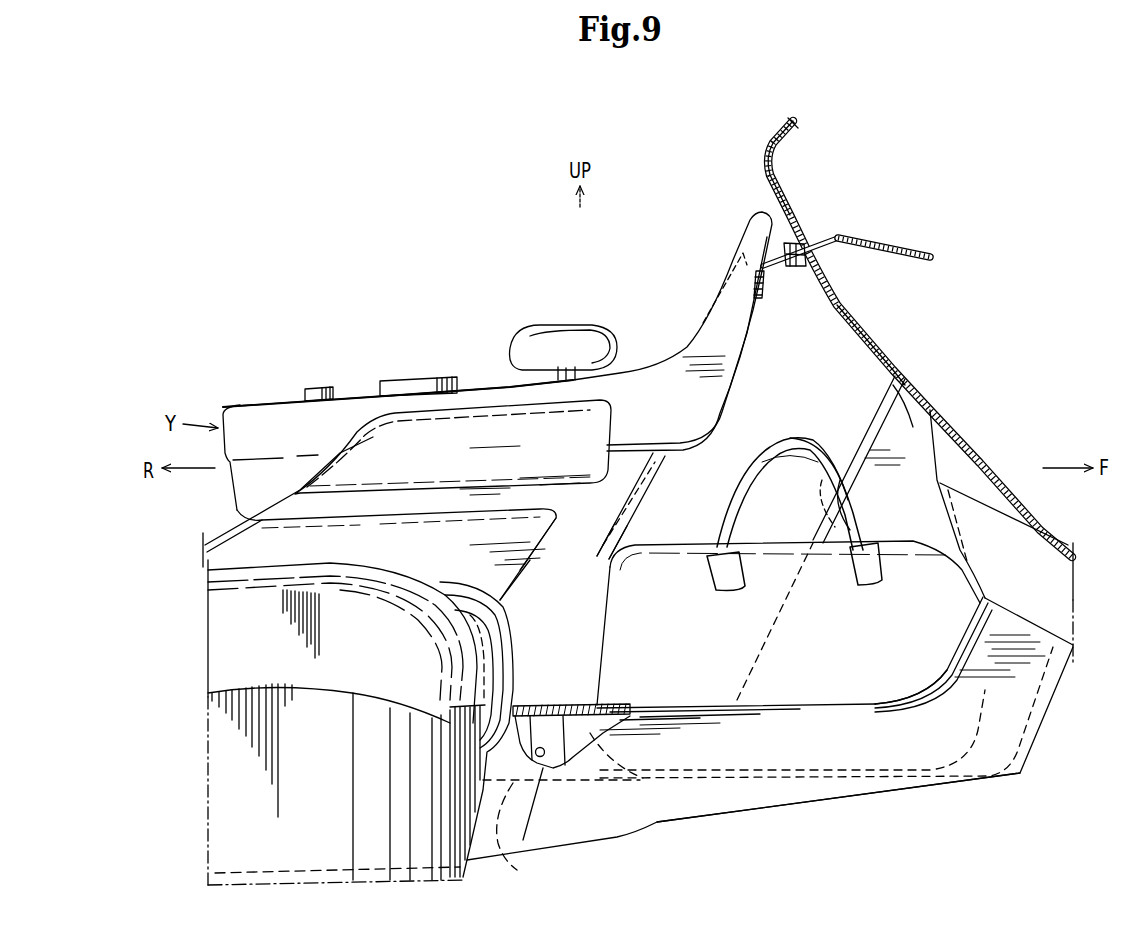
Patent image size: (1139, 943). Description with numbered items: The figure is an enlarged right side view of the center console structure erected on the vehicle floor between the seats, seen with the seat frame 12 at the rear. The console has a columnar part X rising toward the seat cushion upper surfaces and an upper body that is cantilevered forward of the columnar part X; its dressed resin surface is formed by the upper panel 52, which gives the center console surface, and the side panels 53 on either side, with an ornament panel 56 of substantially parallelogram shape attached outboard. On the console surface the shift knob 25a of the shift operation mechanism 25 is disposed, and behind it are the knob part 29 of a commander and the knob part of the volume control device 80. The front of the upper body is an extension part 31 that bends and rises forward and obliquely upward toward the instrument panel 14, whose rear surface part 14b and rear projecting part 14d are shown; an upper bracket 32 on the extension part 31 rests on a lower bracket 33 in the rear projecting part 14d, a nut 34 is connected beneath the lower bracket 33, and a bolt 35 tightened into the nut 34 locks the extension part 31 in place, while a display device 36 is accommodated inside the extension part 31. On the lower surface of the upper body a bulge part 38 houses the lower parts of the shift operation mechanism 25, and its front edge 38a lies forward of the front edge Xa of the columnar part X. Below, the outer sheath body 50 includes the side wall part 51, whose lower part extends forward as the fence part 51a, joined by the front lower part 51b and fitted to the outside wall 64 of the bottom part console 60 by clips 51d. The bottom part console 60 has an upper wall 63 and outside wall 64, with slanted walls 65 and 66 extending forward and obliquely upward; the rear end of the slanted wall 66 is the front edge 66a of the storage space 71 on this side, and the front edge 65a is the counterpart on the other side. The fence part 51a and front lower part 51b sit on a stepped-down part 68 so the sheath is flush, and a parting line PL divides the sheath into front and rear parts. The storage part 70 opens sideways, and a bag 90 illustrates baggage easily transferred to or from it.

The seat frame 12 is at (331, 799).
The instrument panel 14 is at (886, 355).
The rear surface part 14b is at (885, 368).
The rear projecting part 14d is at (768, 150).
The shift operation mechanism 25 is at (503, 326).
The shift knob 25a is at (586, 355).
The knob part of a commander 29 is at (398, 381).
The extension part 31 is at (739, 349).
The upper bracket 32 is at (763, 290).
The lower bracket 33 is at (883, 242).
The nut 34 is at (822, 262).
The bolt 35 is at (795, 243).
The display device 36 is at (720, 290).
The bulge part 38 is at (630, 522).
The front edge of the bulge part 38a is at (655, 488).
The outer sheath body 50 is at (273, 524).
The side wall part 51 is at (404, 554).
The fence part 51a is at (546, 705).
The front lower part 51b is at (514, 864).
The clip 51d is at (548, 752).
The upper panel 52 is at (353, 405).
The side panel 53 is at (245, 492).
The ornament panel 56 is at (464, 463).
The bottom part console 60 is at (763, 810).
The upper wall 63 is at (778, 706).
The outside wall 64 is at (810, 743).
The slanted wall 65 is at (890, 393).
The front edge of the storage space (left) 65a is at (830, 432).
The slanted wall 66 is at (964, 715).
The front edge of the storage space (right) 66a is at (877, 702).
The stepped-down part 68 is at (556, 706).
The storage part 70 is at (700, 533).
The storage space 71 is at (819, 469).
The volume control device 80 is at (264, 649).
The bag 90 is at (704, 655).
The columnar part X is at (548, 545).
The front edge of the columnar part Xa is at (520, 598).
The parting line PL is at (532, 815).